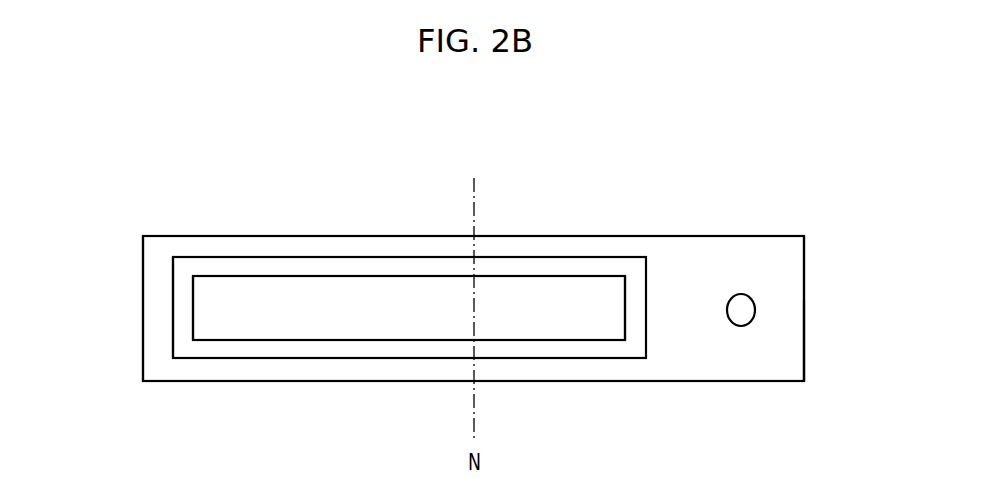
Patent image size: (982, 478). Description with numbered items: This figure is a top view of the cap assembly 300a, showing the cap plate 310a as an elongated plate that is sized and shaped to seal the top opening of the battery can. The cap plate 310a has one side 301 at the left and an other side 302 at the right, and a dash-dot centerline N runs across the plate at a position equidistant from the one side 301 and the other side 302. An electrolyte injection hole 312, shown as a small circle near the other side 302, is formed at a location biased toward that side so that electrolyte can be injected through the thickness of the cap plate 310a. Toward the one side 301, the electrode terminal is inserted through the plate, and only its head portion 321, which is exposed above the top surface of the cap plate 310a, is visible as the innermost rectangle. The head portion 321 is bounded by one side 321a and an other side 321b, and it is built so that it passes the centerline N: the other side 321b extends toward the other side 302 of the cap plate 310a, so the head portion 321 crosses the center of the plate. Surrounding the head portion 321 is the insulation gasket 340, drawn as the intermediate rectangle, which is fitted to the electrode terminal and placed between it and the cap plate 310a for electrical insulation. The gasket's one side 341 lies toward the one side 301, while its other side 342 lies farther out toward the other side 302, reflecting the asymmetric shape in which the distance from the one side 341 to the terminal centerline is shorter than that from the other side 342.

The cap assembly 300a is at (770, 215).
The one side of the cap plate 301 is at (142, 265).
The other side of the cap plate 302 is at (805, 320).
The cap plate 310a is at (790, 275).
The electrolyte injection hole 312 is at (740, 326).
The head portion 321 is at (523, 295).
The one side of the head portion 321a is at (193, 323).
The other side of the head portion 321b is at (627, 288).
The insulation gasket 340 is at (183, 273).
The one side of the insulation gasket 341 is at (173, 296).
The other side of the insulation gasket 342 is at (655, 337).